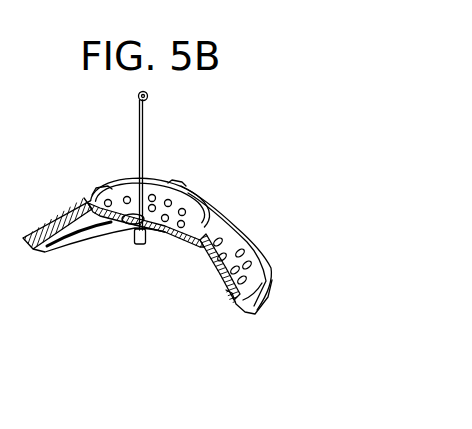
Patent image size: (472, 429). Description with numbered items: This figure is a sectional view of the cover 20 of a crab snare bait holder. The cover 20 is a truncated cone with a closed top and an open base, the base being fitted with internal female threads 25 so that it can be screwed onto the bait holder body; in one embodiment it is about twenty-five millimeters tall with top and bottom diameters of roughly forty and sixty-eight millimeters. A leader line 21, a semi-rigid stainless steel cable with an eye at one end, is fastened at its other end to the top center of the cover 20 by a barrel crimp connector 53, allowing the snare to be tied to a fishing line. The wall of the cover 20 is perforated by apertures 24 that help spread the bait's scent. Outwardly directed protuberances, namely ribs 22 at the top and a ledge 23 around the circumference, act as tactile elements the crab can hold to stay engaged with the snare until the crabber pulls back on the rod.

The cover 20 is at (174, 238).
The leader line 21 is at (148, 98).
The ribs 22 is at (263, 255).
The ledge 23 is at (257, 290).
The apertures 24 is at (251, 266).
The internal female threads 25 is at (68, 237).
The barrel crimp connector 53 is at (142, 244).